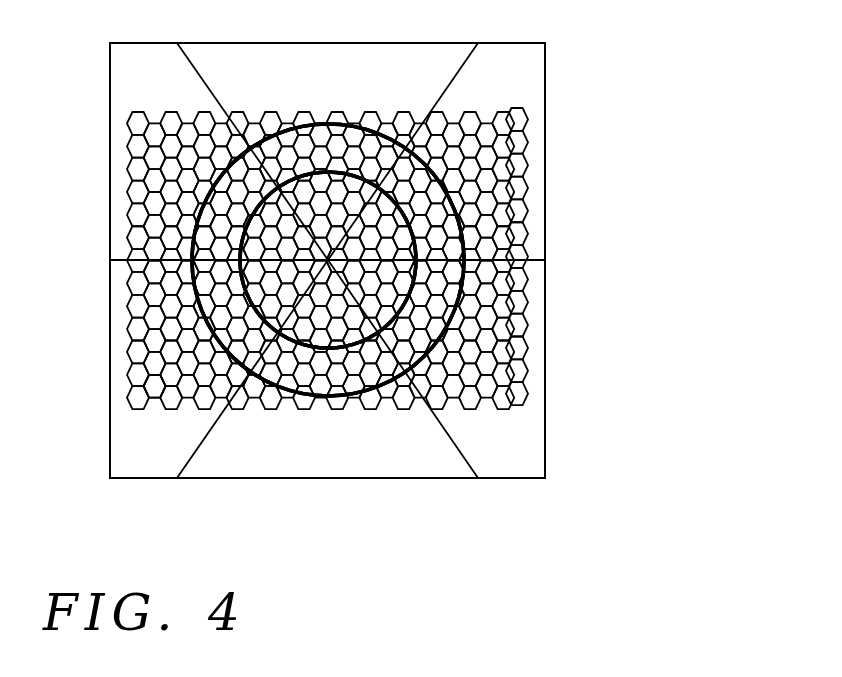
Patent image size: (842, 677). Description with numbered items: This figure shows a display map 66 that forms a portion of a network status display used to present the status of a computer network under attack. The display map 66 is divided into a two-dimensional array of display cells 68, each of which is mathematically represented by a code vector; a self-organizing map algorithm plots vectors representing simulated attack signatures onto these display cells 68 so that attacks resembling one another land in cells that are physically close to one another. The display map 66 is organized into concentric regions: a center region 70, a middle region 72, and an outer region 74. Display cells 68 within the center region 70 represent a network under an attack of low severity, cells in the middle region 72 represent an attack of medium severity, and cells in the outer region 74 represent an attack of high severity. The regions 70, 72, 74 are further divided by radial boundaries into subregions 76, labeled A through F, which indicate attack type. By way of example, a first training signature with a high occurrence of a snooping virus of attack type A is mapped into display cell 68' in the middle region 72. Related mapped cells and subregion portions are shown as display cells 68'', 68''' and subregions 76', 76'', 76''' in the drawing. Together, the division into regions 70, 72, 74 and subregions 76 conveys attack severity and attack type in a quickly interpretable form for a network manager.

The display map 66 is at (362, 269).
The display cells 68 is at (295, 258).
The display cell 68' is at (447, 235).
The cells in middle section 68'' is at (428, 260).
The cells in outer section 68''' is at (390, 260).
The center region 70 is at (257, 284).
The middle region 72 is at (267, 383).
The outer region 74 is at (153, 393).
The subregions 76 is at (326, 267).
The inner section 76' is at (328, 260).
The middle section 76'' is at (328, 260).
The outer section 76''' is at (327, 260).